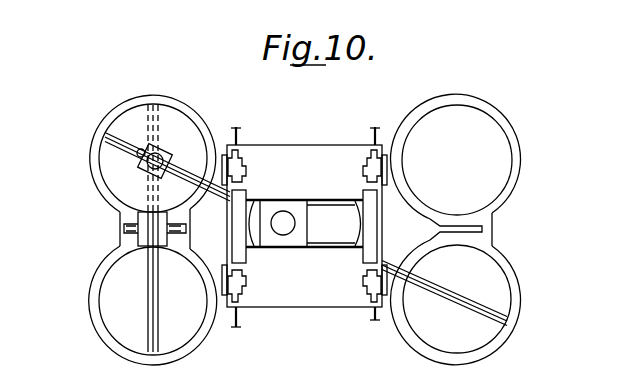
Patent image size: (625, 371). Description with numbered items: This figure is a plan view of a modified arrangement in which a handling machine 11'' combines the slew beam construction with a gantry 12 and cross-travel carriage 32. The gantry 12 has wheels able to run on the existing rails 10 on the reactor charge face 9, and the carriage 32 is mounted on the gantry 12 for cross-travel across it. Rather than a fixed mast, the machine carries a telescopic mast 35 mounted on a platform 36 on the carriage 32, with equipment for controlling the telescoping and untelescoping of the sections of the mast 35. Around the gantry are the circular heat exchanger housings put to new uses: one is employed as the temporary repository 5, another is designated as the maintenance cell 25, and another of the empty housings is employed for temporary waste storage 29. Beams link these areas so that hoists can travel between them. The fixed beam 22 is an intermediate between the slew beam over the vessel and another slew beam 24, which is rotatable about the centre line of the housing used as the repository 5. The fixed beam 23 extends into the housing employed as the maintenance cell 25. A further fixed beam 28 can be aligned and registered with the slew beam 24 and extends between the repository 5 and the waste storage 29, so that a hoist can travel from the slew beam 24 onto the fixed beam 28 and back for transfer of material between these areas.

The temporary repository 5 is at (129, 185).
The reactor charge face 9 is at (283, 131).
The existing rails 10 is at (238, 128).
The handling machine 11'' is at (311, 113).
The gantry 12 is at (323, 148).
The fixed beam 22 is at (225, 196).
The fixed beam 23 is at (443, 297).
The slew beam 24 is at (183, 172).
The maintenance cell 25 is at (478, 282).
The fixed beam 28 is at (156, 264).
The temporary waste storage 29 is at (140, 301).
The carriage 32 is at (349, 184).
The telescopic mast 35 is at (282, 233).
The platform 36 is at (293, 184).